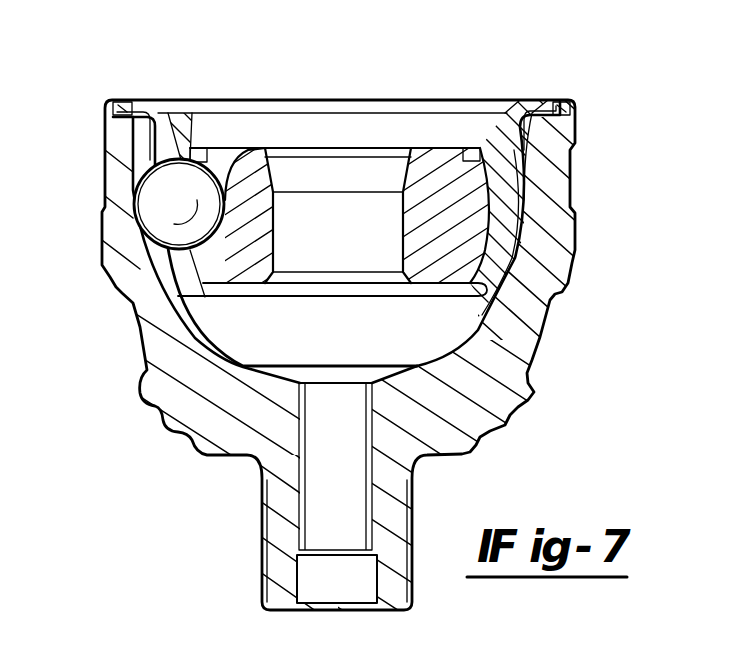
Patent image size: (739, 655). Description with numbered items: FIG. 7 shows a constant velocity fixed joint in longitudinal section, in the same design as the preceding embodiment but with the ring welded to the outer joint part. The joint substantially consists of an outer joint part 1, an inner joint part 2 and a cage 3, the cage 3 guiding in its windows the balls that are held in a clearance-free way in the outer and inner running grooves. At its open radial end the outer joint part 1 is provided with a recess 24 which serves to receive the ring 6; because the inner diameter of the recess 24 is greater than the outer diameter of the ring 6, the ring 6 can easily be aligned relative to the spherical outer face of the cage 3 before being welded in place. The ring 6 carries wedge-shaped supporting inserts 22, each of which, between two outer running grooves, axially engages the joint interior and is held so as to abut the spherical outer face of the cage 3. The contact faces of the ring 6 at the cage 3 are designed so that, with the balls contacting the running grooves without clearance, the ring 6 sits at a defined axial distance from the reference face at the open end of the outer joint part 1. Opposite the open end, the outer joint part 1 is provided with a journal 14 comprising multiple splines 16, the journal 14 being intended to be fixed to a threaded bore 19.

The outer joint part 1 is at (117, 142).
The inner joint part 2 is at (250, 193).
The cage 3 is at (182, 148).
The ring 6 is at (536, 115).
The journal 14 is at (388, 532).
The splines 16 is at (262, 543).
The threaded bore 19 is at (348, 533).
The supporting inserts 22 is at (511, 122).
The recess 24 is at (552, 108).